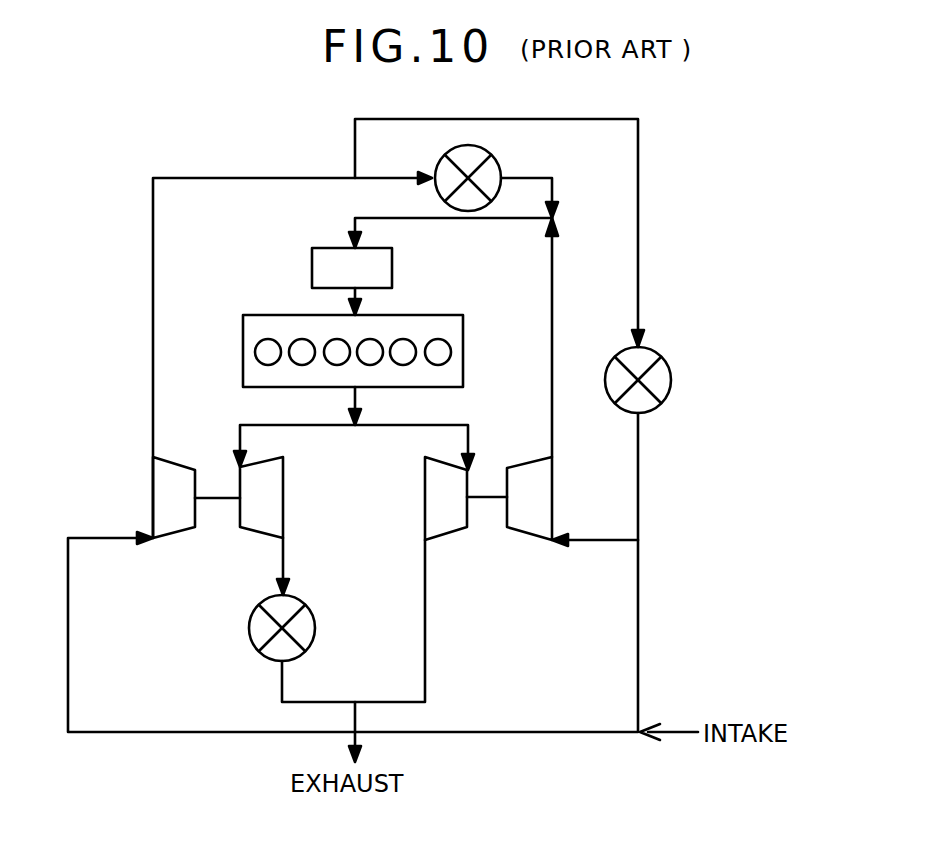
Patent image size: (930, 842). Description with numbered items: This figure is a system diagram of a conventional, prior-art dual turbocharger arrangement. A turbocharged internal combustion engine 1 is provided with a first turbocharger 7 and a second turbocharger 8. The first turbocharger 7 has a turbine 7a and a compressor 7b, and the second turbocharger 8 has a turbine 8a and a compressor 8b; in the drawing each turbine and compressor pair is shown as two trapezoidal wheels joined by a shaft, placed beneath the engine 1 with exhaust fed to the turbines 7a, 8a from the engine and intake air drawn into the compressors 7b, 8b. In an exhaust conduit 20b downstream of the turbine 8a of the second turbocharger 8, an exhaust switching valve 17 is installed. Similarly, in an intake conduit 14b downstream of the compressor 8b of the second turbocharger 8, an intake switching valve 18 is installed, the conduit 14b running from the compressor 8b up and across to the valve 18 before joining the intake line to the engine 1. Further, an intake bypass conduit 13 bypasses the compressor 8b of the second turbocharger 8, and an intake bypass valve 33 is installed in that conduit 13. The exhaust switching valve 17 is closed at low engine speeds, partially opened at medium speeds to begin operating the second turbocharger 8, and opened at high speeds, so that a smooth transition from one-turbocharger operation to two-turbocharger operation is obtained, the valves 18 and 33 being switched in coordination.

The conventional turbocharged internal combustion engine 1 is at (463, 362).
The first turbocharger 7 is at (487, 490).
The turbine of first turbocharger 7a is at (440, 505).
The compressor of first turbocharger 7b is at (570, 485).
The second turbocharger 8 is at (218, 492).
The turbine of second turbocharger 8a is at (283, 490).
The compressor of second turbocharger 8b is at (167, 507).
The intake bypass conduit 13 is at (638, 228).
The intake conduit 14b is at (153, 288).
The exhaust switching valve 17 is at (248, 625).
The intake switching valve 18 is at (490, 160).
The exhaust conduit 20b is at (272, 668).
The intake bypass valve 33 is at (662, 366).